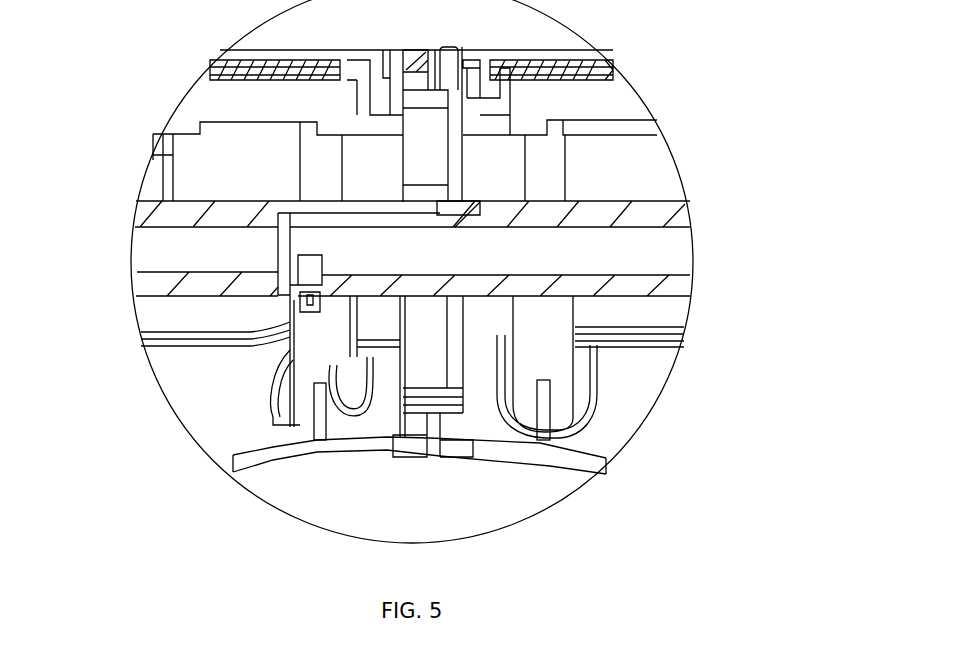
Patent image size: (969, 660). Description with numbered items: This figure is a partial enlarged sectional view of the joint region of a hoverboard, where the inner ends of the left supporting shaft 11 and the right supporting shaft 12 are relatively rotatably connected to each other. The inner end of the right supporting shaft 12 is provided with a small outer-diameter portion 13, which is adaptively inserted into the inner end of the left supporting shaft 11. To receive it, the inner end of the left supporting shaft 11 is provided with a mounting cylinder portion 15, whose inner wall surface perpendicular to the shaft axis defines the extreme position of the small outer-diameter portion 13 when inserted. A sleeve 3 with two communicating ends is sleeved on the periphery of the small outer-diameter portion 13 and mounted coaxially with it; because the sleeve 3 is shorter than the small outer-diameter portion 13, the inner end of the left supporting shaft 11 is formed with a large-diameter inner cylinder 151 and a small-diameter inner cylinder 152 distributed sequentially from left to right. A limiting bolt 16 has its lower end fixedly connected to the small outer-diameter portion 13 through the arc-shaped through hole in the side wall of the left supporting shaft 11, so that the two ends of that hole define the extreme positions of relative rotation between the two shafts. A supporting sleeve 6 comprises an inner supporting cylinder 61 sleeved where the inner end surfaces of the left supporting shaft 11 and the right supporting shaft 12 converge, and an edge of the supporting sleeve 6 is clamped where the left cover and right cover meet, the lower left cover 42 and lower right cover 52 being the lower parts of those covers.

The sleeve 3 is at (405, 290).
The supporting sleeve 6 is at (430, 156).
The left supporting shaft 11 is at (183, 213).
The right supporting shaft 12 is at (648, 219).
The small outer-diameter portion 13 is at (388, 221).
The mounting cylinder portion 15 is at (288, 247).
The limiting bolt 16 is at (305, 303).
The lower left cover 42 is at (313, 457).
The lower right cover 52 is at (521, 449).
The inner supporting cylinder 61 is at (423, 312).
The large-diameter inner cylinder 151 is at (316, 213).
The small-diameter inner cylinder 152 is at (383, 210).